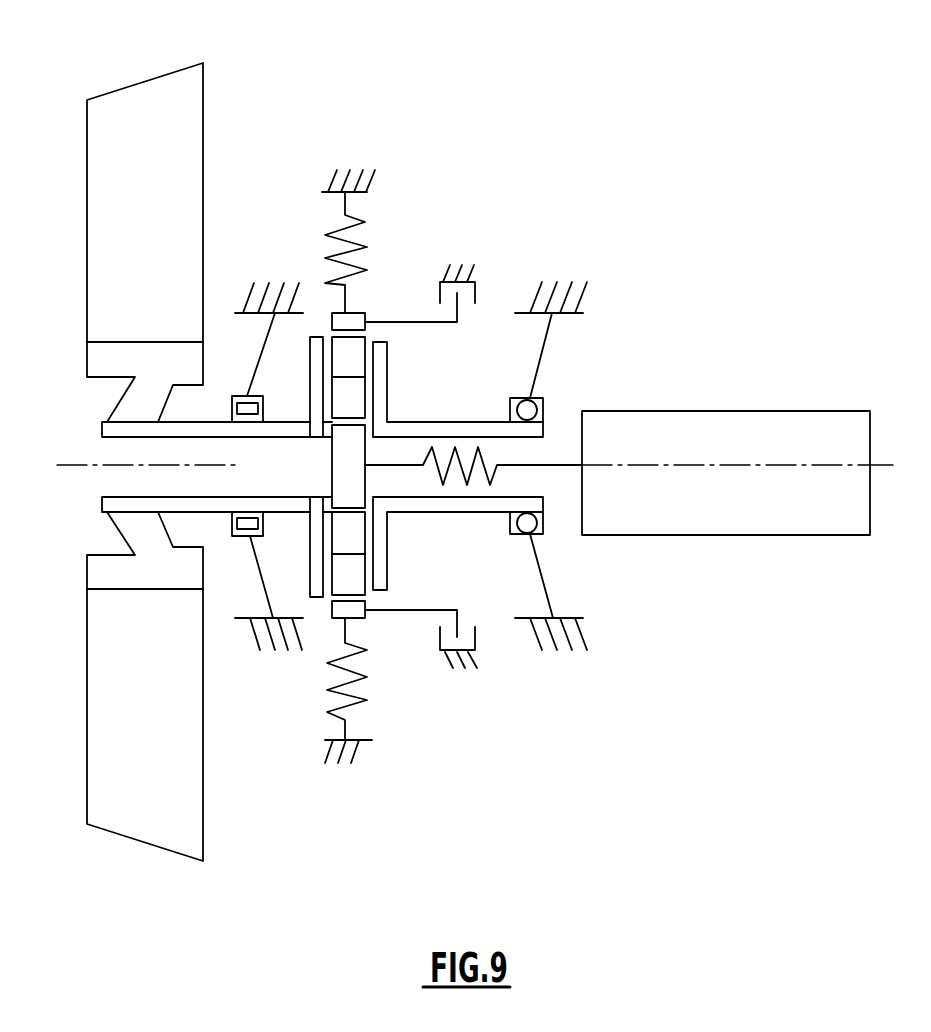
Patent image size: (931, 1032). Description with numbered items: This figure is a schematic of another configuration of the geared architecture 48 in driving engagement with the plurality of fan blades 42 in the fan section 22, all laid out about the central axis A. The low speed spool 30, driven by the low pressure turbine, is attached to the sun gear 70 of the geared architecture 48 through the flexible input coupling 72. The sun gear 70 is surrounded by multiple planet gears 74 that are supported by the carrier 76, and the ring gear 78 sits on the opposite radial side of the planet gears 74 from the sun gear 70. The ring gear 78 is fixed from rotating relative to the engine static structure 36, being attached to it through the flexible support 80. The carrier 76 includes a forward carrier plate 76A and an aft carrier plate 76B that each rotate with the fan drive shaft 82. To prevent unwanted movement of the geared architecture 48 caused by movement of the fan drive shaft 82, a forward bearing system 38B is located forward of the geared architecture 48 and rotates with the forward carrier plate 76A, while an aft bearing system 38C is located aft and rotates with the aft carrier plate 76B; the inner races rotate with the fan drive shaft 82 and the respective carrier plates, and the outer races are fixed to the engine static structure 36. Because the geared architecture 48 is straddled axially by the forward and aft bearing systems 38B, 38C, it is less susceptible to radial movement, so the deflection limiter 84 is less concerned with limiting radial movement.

The fan section 22 is at (115, 446).
The fan blades 42 is at (160, 232).
The geared architecture 48 is at (342, 459).
The engine static structure 36 is at (367, 192).
The flexible support 80 is at (367, 222).
The deflection limiter 84 is at (495, 240).
The ring gear 78 is at (367, 312).
The forward bearing system 38B is at (240, 395).
The aft carrier plate 76B is at (387, 373).
The planet gears 74 is at (355, 402).
The aft bearing system 38C is at (543, 398).
The fan drive shaft 82 is at (100, 430).
The forward carrier plate 76A is at (310, 395).
The flexible input coupling 72 is at (440, 480).
The sun gear 70 is at (367, 478).
The carrier 76 is at (401, 566).
The low speed spool 30 is at (678, 535).
The engine central longitudinal axis A is at (77, 465).